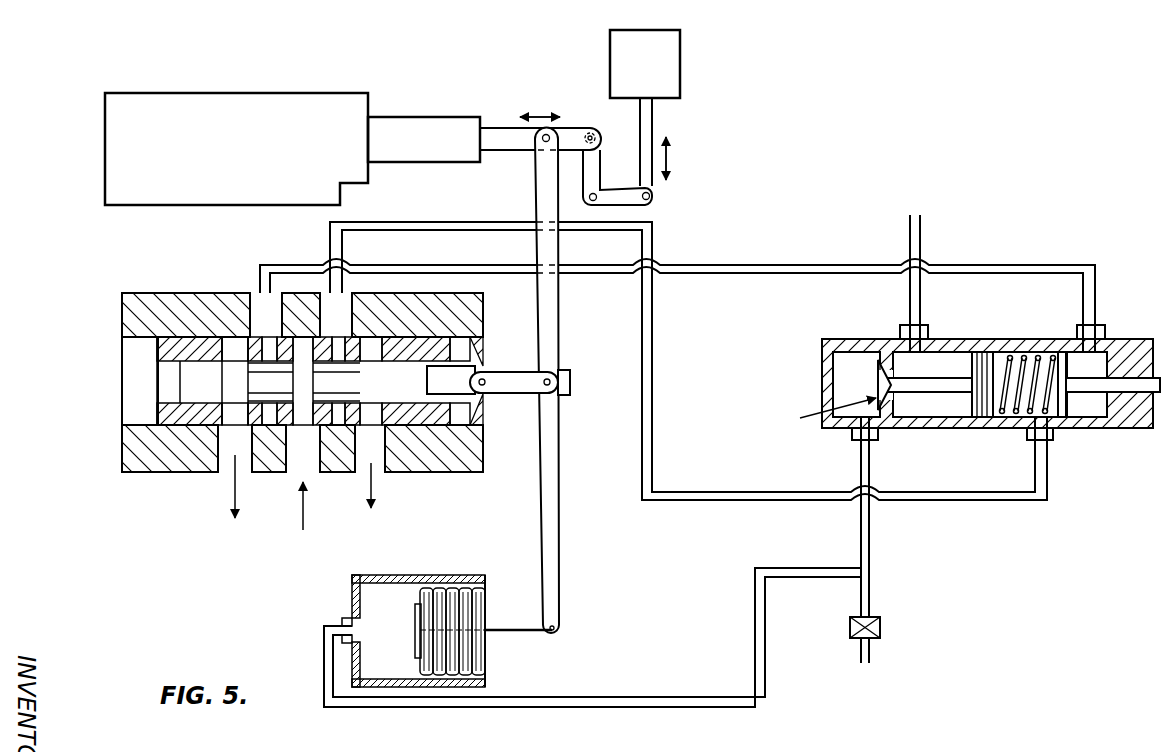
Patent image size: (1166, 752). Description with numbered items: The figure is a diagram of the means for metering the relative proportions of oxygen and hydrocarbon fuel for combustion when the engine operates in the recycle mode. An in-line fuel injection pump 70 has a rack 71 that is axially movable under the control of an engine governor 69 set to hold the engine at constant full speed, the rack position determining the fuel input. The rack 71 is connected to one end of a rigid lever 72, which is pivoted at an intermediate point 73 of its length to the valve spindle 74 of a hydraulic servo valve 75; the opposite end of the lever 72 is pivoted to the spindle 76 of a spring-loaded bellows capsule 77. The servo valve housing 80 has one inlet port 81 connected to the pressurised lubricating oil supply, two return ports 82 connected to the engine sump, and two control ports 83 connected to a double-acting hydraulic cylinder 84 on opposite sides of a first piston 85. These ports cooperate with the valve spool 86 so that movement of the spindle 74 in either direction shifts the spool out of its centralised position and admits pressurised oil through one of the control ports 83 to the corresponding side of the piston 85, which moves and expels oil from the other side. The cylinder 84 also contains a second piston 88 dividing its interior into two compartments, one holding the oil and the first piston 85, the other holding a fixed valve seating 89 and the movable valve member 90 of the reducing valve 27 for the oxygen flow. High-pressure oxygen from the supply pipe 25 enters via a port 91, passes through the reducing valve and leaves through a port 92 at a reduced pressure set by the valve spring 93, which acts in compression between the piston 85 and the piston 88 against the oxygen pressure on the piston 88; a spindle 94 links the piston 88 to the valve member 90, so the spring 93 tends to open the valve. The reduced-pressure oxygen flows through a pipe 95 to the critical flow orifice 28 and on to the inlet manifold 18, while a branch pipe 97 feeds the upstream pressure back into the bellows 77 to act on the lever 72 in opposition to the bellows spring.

The in-line fuel injection pump 70 is at (358, 112).
The rack 71 is at (496, 127).
The engine governor 69 is at (672, 70).
The rigid lever 72 is at (553, 328).
The intermediate pivot point 73 is at (570, 382).
The valve spindle 74 is at (512, 395).
The hydraulic servo valve 75 is at (192, 288).
The control ports 83 is at (280, 333).
The valve spool 86 is at (407, 396).
The return ports 82 is at (228, 458).
The inlet port 81 is at (308, 458).
The servo valve housing 80 is at (435, 457).
The spring-loaded bellows capsule 77 is at (472, 575).
The pump rod 76 is at (518, 628).
The branch pipe 97 is at (663, 701).
The pipe 95 is at (869, 547).
The supply pipe 25 is at (921, 243).
The critical flow orifice 28 is at (880, 617).
The inlet manifold 18 is at (870, 652).
The double-acting hydraulic cylinder 84 is at (1009, 336).
The second piston 88 is at (982, 357).
The first piston 85 is at (1060, 357).
The port 91 is at (915, 345).
The movable valve member 90 is at (877, 390).
The reducing valve 27 is at (829, 414).
The port 92 is at (867, 432).
The fixed valve seating 89 is at (897, 410).
The spindle 94 is at (938, 392).
The valve spring 93 is at (1018, 413).